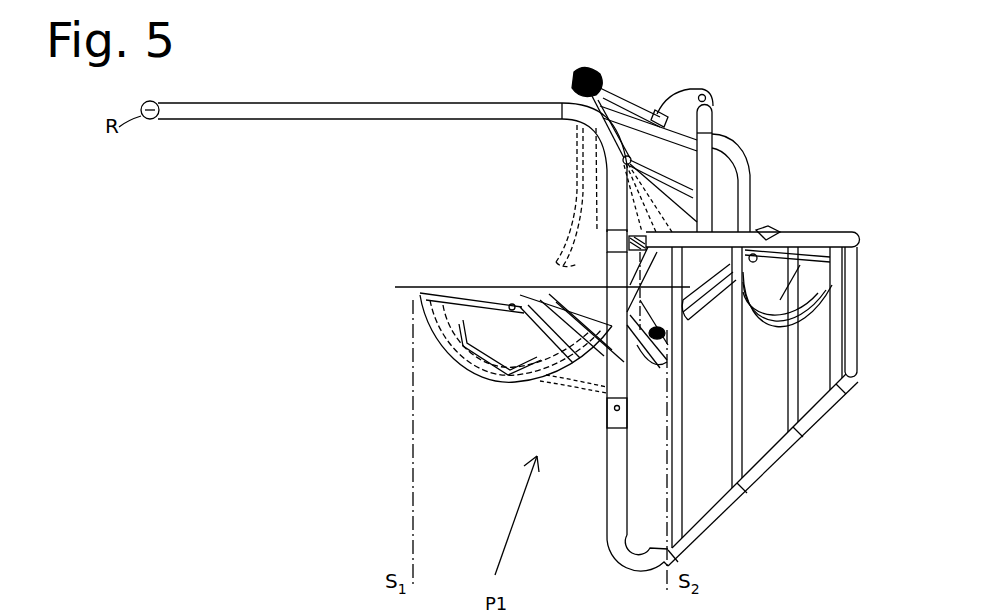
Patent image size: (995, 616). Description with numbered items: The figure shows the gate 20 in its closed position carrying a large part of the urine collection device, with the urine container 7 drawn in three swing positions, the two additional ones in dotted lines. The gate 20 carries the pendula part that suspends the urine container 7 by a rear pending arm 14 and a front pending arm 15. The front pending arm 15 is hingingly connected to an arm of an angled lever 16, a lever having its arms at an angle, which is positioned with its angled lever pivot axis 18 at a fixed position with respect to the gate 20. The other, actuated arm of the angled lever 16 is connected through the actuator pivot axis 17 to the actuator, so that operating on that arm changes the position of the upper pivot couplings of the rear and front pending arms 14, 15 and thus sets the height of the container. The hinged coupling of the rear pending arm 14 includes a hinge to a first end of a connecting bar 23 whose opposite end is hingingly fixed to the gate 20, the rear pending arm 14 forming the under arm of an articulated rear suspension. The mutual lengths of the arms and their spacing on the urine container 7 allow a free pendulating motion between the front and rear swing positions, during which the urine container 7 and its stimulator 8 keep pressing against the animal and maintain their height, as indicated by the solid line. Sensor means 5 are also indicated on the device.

The sensor means 5 is at (242, 121).
The urine container 7 is at (520, 366).
The stimulator 8 is at (426, 290).
The rear pending arm 14 is at (578, 248).
The front pending arm 15 is at (584, 181).
The angled lever 16 is at (633, 97).
The actuator pivot axis 17 is at (707, 94).
The angled lever pivot axis 18 is at (657, 110).
The gate 20 is at (856, 328).
The connecting bar 23 is at (648, 169).